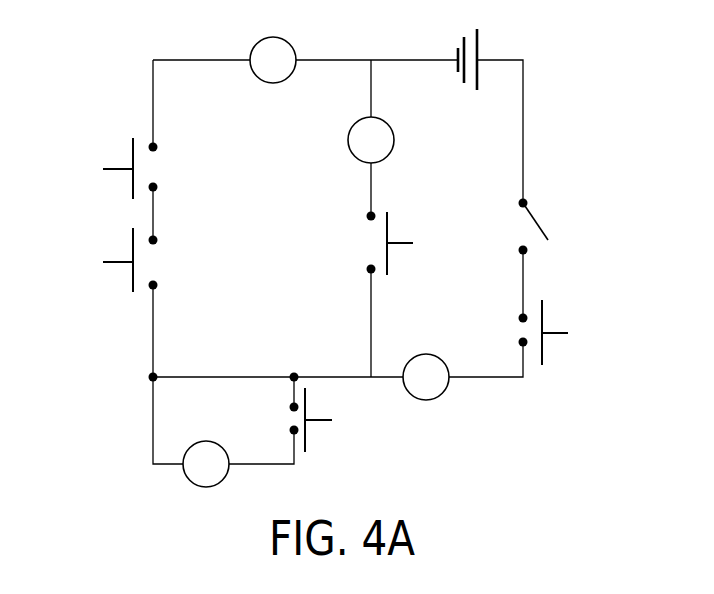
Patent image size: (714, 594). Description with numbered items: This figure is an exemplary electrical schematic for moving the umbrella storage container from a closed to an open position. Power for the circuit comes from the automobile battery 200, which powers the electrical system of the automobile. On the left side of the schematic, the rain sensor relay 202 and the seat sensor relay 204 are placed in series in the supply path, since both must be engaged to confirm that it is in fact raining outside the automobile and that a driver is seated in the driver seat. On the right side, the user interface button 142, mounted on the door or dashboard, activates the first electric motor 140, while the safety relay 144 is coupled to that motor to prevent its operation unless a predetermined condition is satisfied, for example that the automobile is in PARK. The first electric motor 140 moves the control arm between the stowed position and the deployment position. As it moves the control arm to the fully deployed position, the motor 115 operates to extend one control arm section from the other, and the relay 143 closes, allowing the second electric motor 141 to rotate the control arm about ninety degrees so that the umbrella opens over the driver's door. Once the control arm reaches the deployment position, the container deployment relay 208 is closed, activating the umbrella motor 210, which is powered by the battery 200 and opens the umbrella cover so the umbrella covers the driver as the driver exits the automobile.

The motor 115 is at (271, 83).
The first electric motor 140 is at (444, 392).
The second electric motor 141 is at (391, 153).
The user interface button 142 is at (536, 218).
The relay 143 is at (390, 253).
The safety relay 144 is at (553, 332).
The automobile battery 200 is at (478, 44).
The rain sensor relay 202 is at (118, 166).
The seat sensor relay 204 is at (128, 272).
The container deployment relay 208 is at (320, 421).
The umbrella motor 210 is at (188, 478).